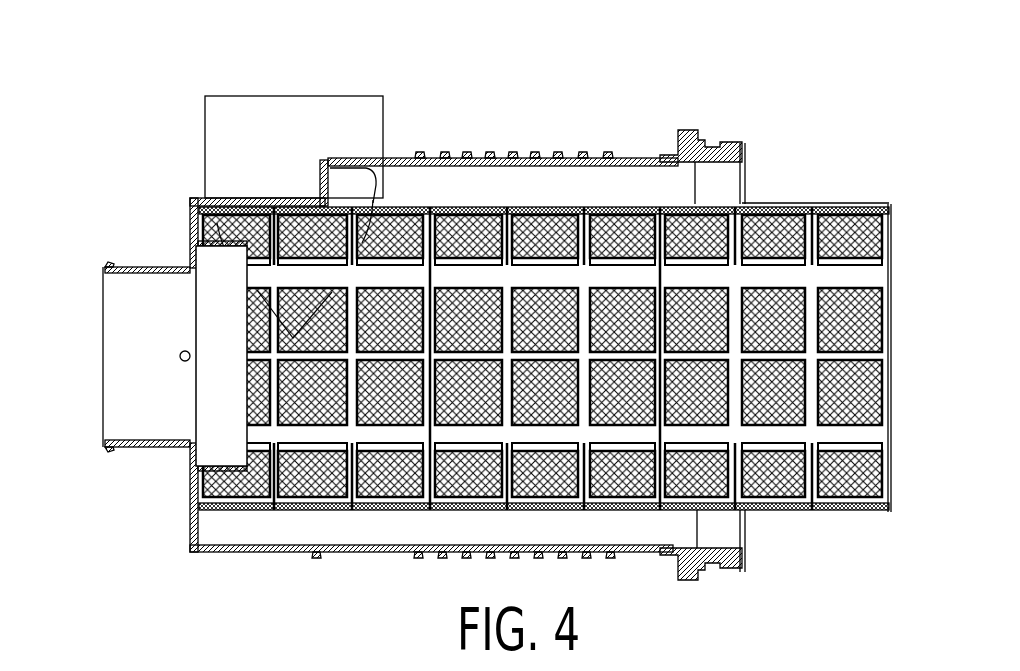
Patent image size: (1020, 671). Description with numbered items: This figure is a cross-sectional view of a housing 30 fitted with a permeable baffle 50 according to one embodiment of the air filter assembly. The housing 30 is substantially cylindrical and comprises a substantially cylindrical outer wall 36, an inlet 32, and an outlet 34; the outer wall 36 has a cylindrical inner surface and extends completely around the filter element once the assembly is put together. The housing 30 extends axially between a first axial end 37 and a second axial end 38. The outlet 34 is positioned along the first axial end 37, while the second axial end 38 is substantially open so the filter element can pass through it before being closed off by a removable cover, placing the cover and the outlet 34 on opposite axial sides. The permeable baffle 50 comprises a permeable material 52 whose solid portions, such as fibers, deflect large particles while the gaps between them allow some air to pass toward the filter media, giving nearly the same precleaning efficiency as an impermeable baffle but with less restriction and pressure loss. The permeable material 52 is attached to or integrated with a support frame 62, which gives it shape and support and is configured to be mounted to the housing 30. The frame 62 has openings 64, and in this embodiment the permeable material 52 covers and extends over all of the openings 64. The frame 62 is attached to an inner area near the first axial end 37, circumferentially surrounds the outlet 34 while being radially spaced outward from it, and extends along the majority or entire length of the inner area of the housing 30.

The housing 30 is at (641, 157).
The inlet 32 is at (350, 95).
The outlet 34 is at (101, 410).
The outer wall 36 is at (542, 158).
The first axial end 37 is at (102, 353).
The second axial end 38 is at (745, 178).
The permeable baffle 50 is at (228, 511).
The permeable material 52 is at (393, 478).
The support frame 62 is at (540, 508).
The openings 64 is at (852, 238).